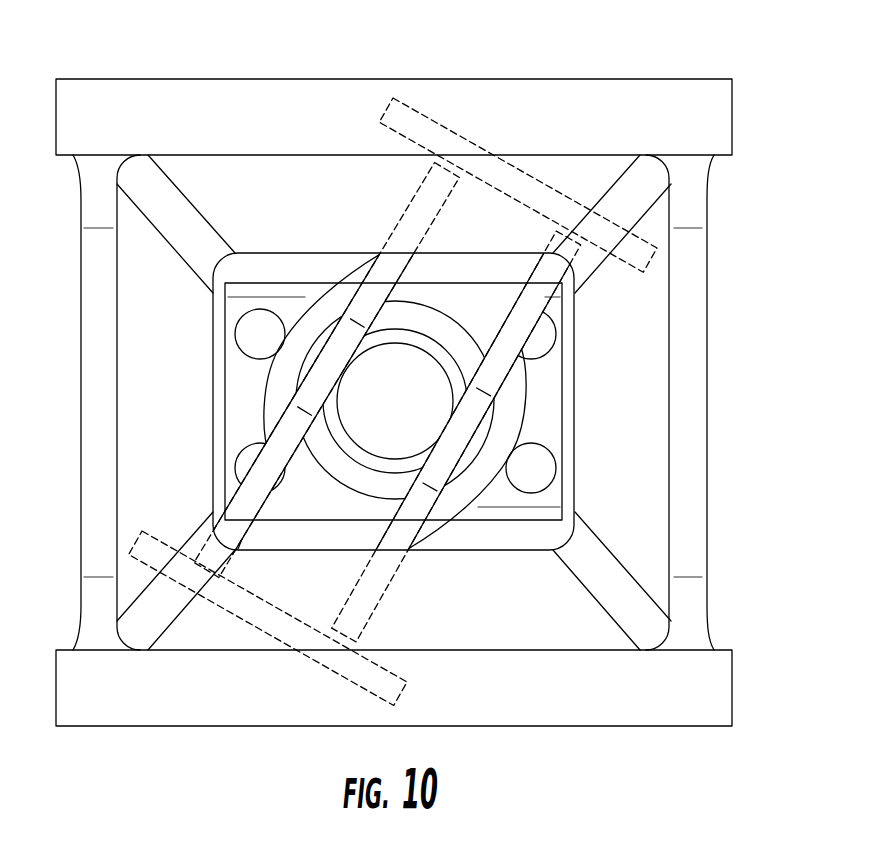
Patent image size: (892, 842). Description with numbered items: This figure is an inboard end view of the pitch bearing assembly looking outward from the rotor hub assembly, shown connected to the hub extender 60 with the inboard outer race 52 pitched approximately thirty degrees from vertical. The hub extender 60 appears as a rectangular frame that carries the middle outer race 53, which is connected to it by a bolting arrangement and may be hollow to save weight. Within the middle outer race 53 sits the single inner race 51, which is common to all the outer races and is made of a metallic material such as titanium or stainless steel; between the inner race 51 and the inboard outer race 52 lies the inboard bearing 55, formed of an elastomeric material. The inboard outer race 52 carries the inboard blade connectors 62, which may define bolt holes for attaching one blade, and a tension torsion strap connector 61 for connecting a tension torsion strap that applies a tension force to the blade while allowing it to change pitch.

The inner race 51 is at (373, 465).
The inboard outer race 52 is at (495, 300).
The middle outer race 53 is at (545, 391).
The inboard bearing 55 is at (487, 427).
The hub extender 60 is at (707, 115).
The tension torsion strap connector 61 is at (453, 442).
The inboard blade connectors 62 is at (418, 125).